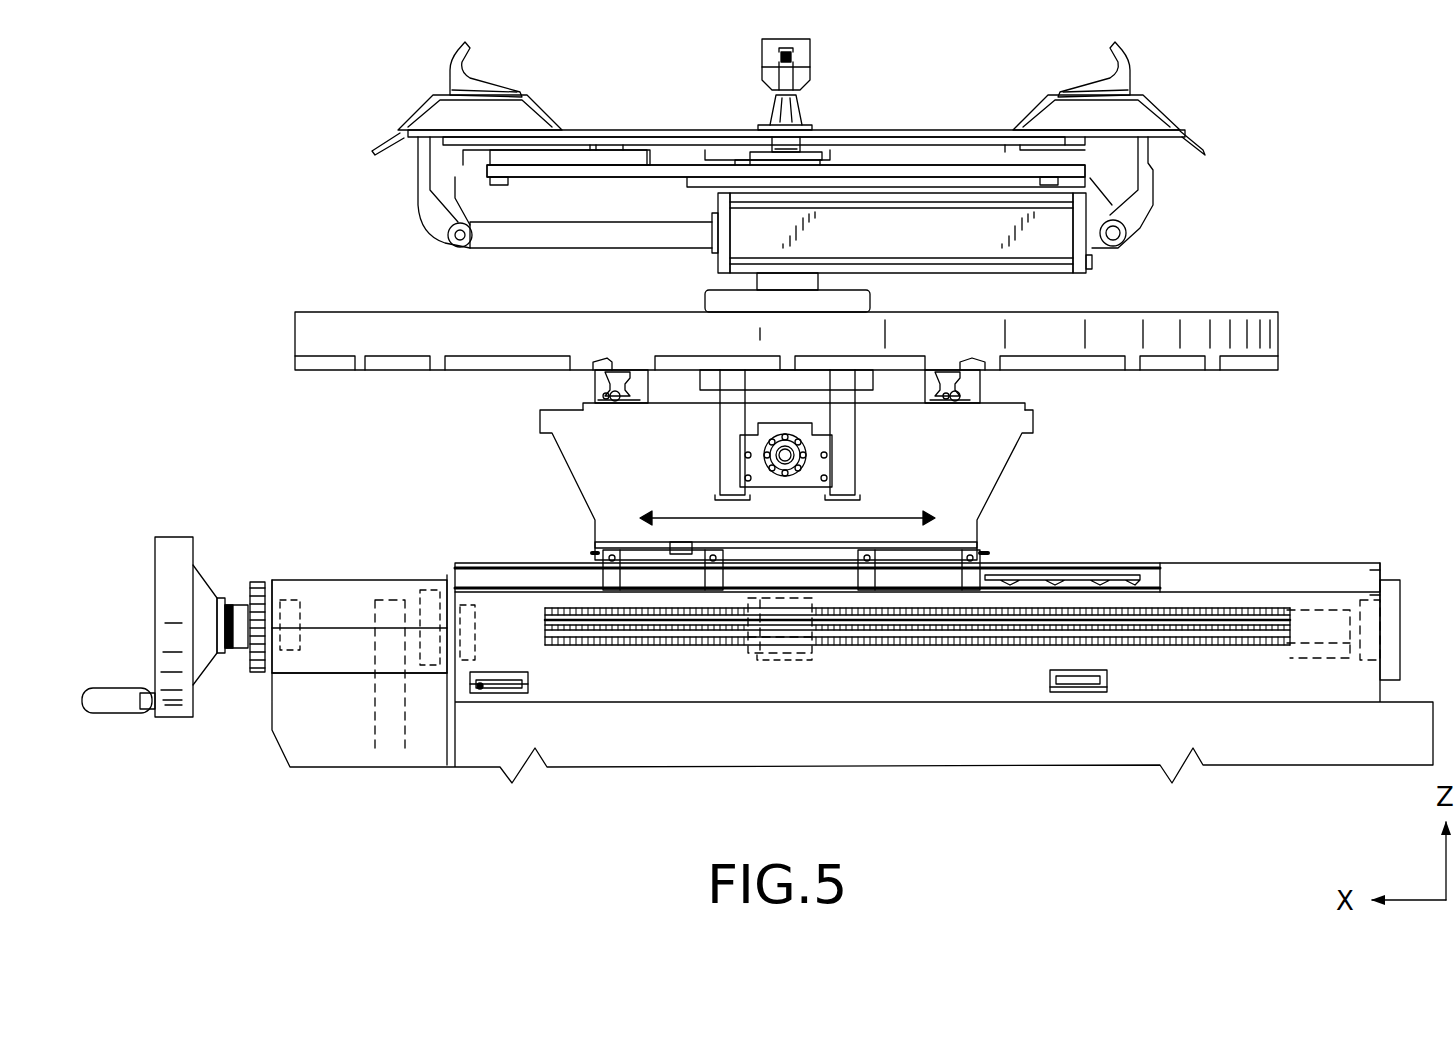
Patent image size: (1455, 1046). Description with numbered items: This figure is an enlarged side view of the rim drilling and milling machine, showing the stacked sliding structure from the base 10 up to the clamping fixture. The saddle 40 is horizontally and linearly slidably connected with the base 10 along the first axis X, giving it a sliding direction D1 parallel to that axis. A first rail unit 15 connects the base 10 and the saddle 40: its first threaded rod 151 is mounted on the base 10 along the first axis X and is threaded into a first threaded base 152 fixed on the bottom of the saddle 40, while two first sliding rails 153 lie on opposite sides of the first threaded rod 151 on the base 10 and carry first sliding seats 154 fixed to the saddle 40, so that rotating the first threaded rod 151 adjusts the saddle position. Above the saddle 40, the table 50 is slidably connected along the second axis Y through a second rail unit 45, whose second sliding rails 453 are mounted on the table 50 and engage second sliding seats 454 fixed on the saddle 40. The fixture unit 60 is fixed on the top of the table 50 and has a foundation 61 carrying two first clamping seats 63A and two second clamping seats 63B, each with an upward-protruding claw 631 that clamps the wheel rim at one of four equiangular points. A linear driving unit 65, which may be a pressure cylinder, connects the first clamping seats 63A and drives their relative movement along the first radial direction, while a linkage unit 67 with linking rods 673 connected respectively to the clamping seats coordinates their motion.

The base 10 is at (1430, 695).
The first rail unit 15 is at (340, 548).
The saddle 40 is at (560, 482).
The second rail unit 45 is at (553, 386).
The table 50 is at (1180, 300).
The fixture unit 60 is at (1190, 92).
The foundation 61 is at (723, 124).
The first clamping seat 63A is at (497, 72).
The second clamping seat 63B is at (820, 72).
The claw 631 is at (463, 52).
The linear driving unit 65 is at (657, 258).
The linkage unit 67 is at (684, 162).
The linking rod 673 is at (609, 172).
The first threaded rod 151 is at (672, 650).
The first threaded base 152 is at (785, 650).
The first sliding rail 153 is at (1116, 580).
The first sliding seat 154 is at (932, 575).
The second sliding rail 453 is at (960, 370).
The second sliding seat 454 is at (970, 392).
The sliding direction D1 is at (687, 515).